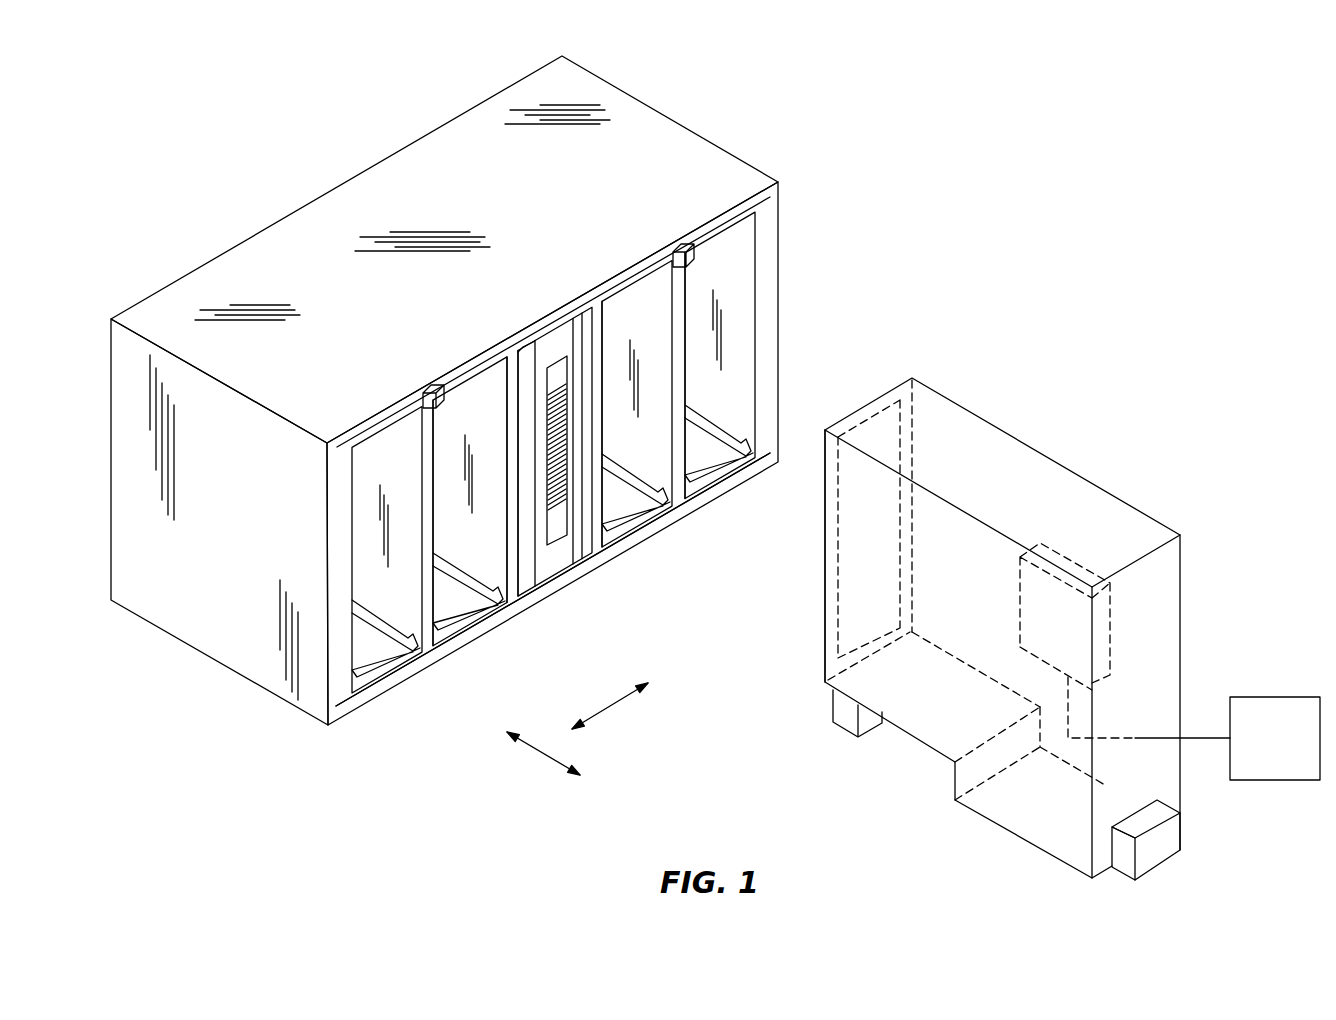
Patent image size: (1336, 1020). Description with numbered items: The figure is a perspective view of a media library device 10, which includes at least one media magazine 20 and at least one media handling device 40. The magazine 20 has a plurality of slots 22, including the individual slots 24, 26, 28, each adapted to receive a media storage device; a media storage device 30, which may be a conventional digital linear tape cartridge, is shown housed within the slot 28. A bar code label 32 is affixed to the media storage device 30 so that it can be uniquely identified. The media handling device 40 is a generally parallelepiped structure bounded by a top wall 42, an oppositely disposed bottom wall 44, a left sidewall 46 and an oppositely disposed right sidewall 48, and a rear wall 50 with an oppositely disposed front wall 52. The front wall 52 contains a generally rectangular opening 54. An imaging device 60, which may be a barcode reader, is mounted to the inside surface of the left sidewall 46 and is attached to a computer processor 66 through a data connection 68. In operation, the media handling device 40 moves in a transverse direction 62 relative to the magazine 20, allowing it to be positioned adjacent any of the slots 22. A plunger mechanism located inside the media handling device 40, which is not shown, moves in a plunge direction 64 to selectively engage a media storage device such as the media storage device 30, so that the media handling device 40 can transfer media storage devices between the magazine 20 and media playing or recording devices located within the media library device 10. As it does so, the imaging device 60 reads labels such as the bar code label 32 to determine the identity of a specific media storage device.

The media library device 10 is at (1042, 190).
The media magazine 20 is at (444, 390).
The slots 22 is at (458, 406).
The slot 24 is at (392, 437).
The slot 26 is at (478, 395).
The slot 28 is at (600, 573).
The media storage device 30 is at (548, 488).
The bar code label 32 is at (557, 535).
The media handling device 40 is at (1027, 595).
The top wall 42 is at (1000, 452).
The bottom wall 44 is at (928, 770).
The left sidewall 46 is at (1000, 795).
The right sidewall 48 is at (1100, 468).
The rear wall 50 is at (1170, 593).
The front wall 52 is at (896, 365).
The opening 54 is at (868, 412).
The imaging device 60 is at (1100, 656).
The transverse direction 62 is at (625, 712).
The plunge direction 64 is at (545, 758).
The computer processor 66 is at (1290, 752).
The data connection 68 is at (1200, 742).